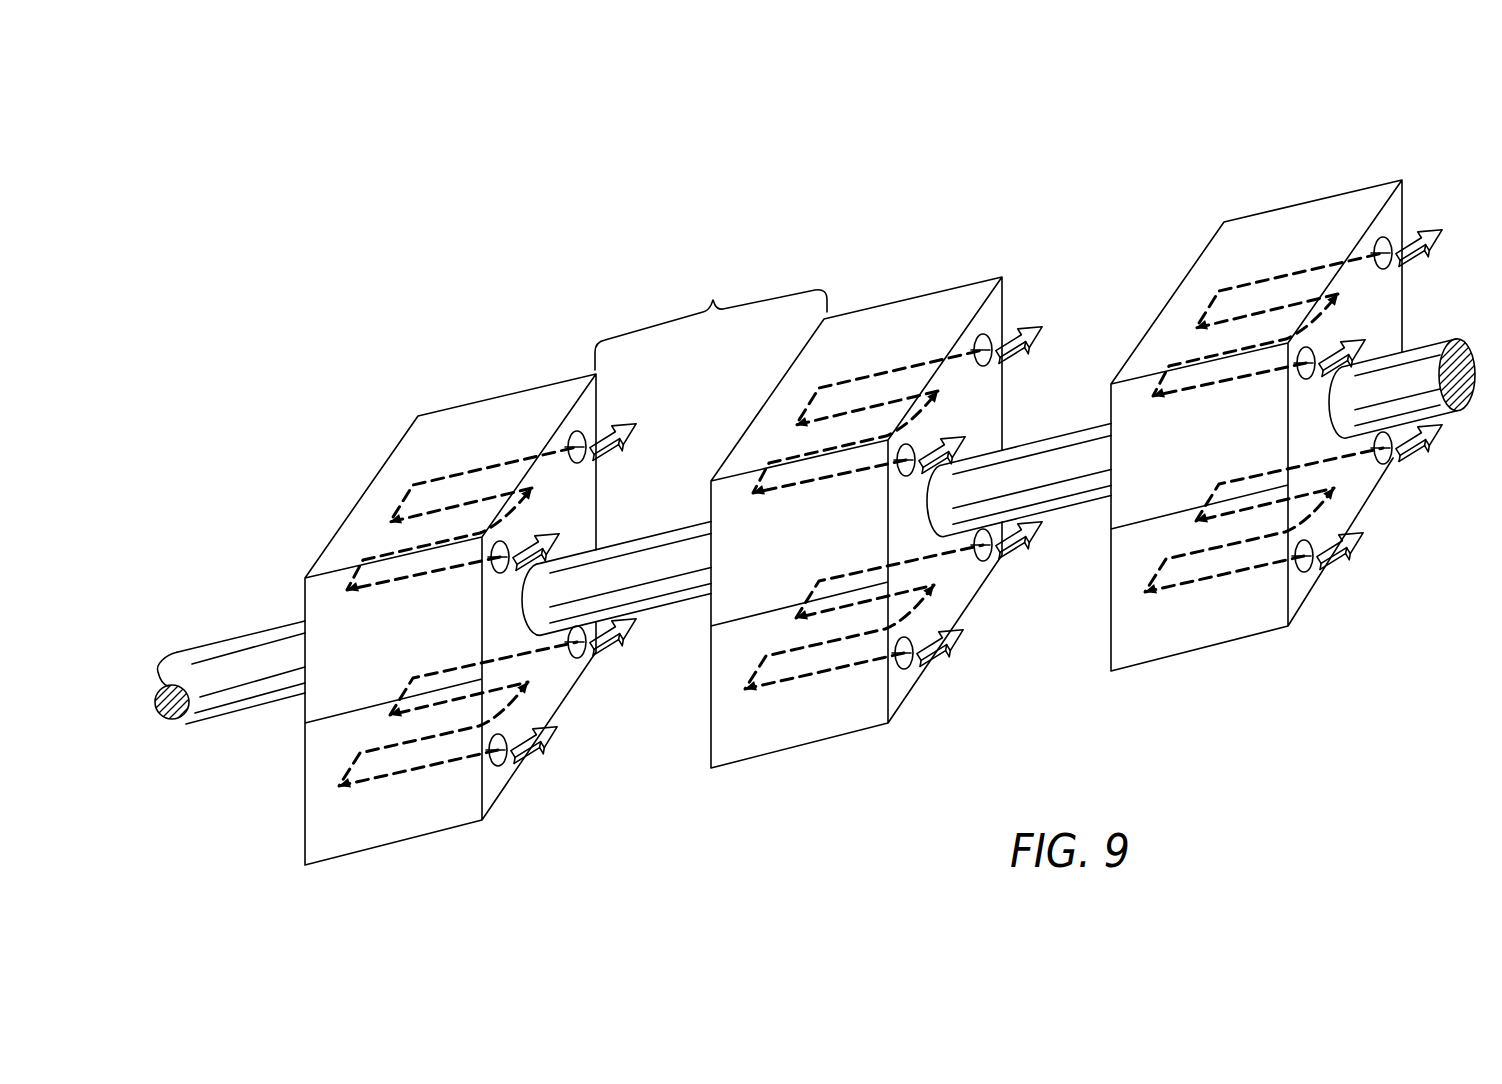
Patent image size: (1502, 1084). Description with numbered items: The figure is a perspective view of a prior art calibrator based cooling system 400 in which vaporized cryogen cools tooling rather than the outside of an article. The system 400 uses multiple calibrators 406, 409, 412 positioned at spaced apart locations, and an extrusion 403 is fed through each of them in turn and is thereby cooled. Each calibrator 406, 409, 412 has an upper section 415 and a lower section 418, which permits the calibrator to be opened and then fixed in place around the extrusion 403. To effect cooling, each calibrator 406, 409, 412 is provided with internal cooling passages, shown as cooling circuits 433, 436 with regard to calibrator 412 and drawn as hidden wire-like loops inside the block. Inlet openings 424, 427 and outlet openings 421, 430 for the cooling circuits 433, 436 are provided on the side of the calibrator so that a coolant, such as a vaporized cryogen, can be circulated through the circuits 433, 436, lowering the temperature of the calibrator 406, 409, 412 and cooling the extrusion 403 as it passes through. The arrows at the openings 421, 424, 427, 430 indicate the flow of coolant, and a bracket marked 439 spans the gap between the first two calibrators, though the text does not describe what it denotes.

The calibrator based cooling system 400 is at (512, 307).
The extrusion 403 is at (243, 653).
The calibrator 406 is at (387, 847).
The calibrator 409 is at (808, 745).
The calibrator 412 is at (1157, 663).
The upper section 415 is at (580, 503).
The lower section 418 is at (557, 690).
The outlet opening 421 is at (1395, 250).
The inlet opening 424 is at (1320, 373).
The inlet opening 427 is at (1385, 452).
The outlet opening 430 is at (1313, 564).
The cooling circuit 433 is at (1290, 278).
The cooling circuit 436 is at (1210, 582).
The spacing between coil bodies 439 is at (711, 317).